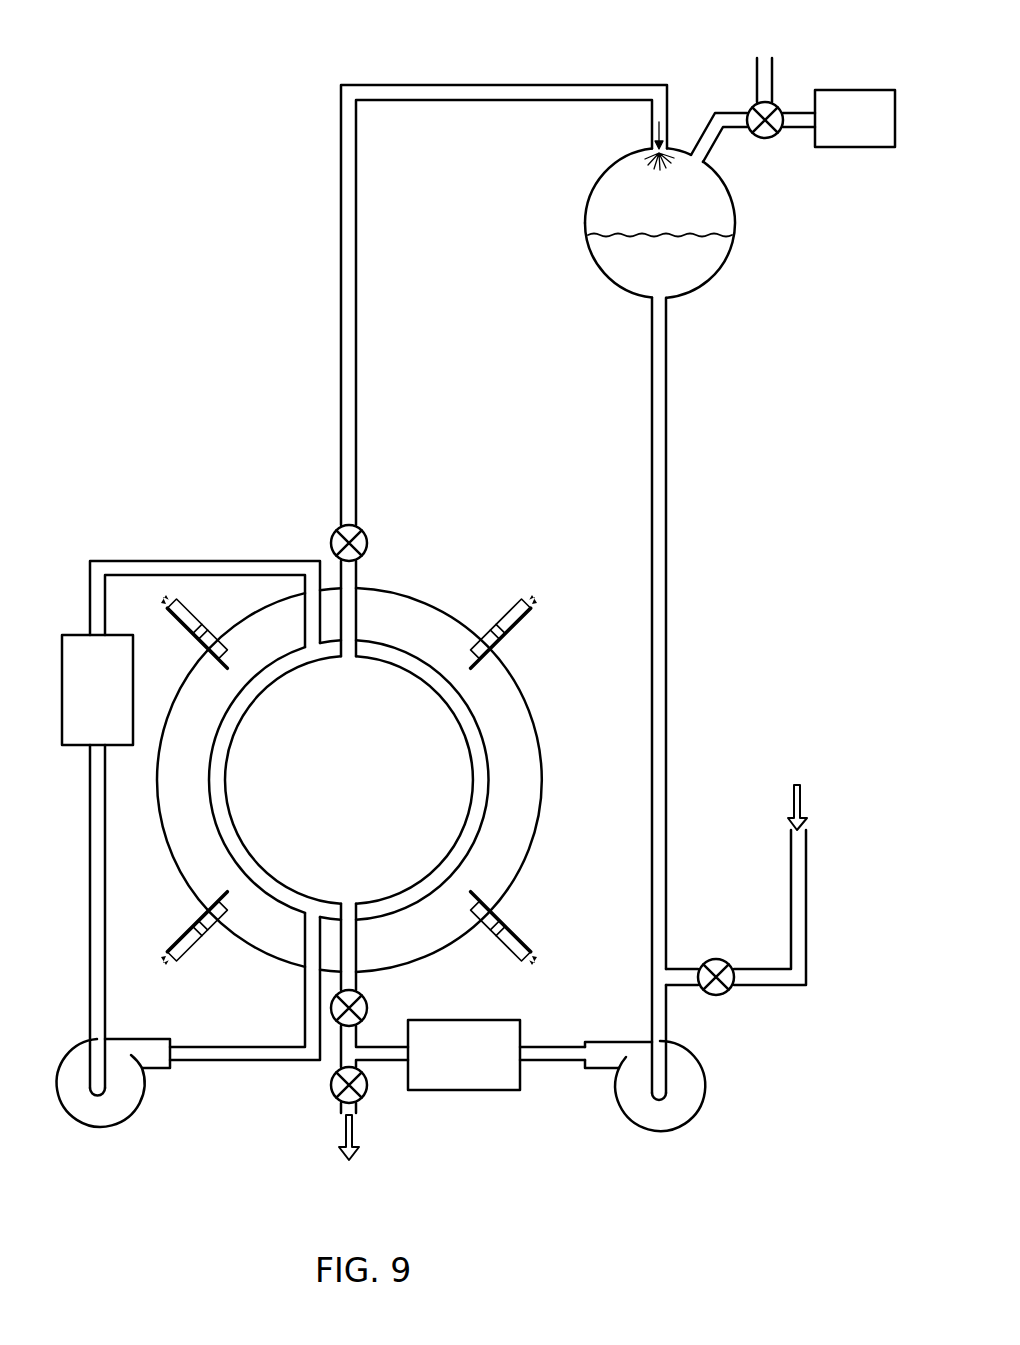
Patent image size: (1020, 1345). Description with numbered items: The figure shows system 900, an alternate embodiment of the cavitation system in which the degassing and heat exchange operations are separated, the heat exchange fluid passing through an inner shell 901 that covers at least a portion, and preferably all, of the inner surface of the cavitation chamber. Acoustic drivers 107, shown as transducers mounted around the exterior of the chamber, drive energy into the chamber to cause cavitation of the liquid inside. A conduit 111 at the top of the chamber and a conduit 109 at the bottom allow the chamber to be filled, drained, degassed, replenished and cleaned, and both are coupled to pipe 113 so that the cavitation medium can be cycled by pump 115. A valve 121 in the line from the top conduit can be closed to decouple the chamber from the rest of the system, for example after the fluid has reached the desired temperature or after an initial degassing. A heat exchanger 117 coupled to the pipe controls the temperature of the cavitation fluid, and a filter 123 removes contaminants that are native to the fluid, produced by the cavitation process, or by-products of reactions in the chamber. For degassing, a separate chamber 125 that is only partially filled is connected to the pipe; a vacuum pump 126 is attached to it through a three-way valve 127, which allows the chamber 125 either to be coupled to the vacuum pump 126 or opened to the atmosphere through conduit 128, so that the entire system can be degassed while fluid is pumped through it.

The system 900 is at (236, 377).
The pipe 113 is at (357, 201).
The valve 121 is at (368, 543).
The conduit 111 is at (357, 618).
The conduit 109 is at (357, 937).
The inner shell 901 is at (251, 726).
The acoustic drivers 107 is at (530, 652).
The heat exchanger 117 is at (78, 702).
The filter 123 is at (445, 1067).
The pump 115 is at (695, 1107).
The chamber 125 is at (566, 262).
The three-way valve 127 is at (765, 138).
The vacuum pump 126 is at (836, 130).
The conduit 128 is at (766, 42).